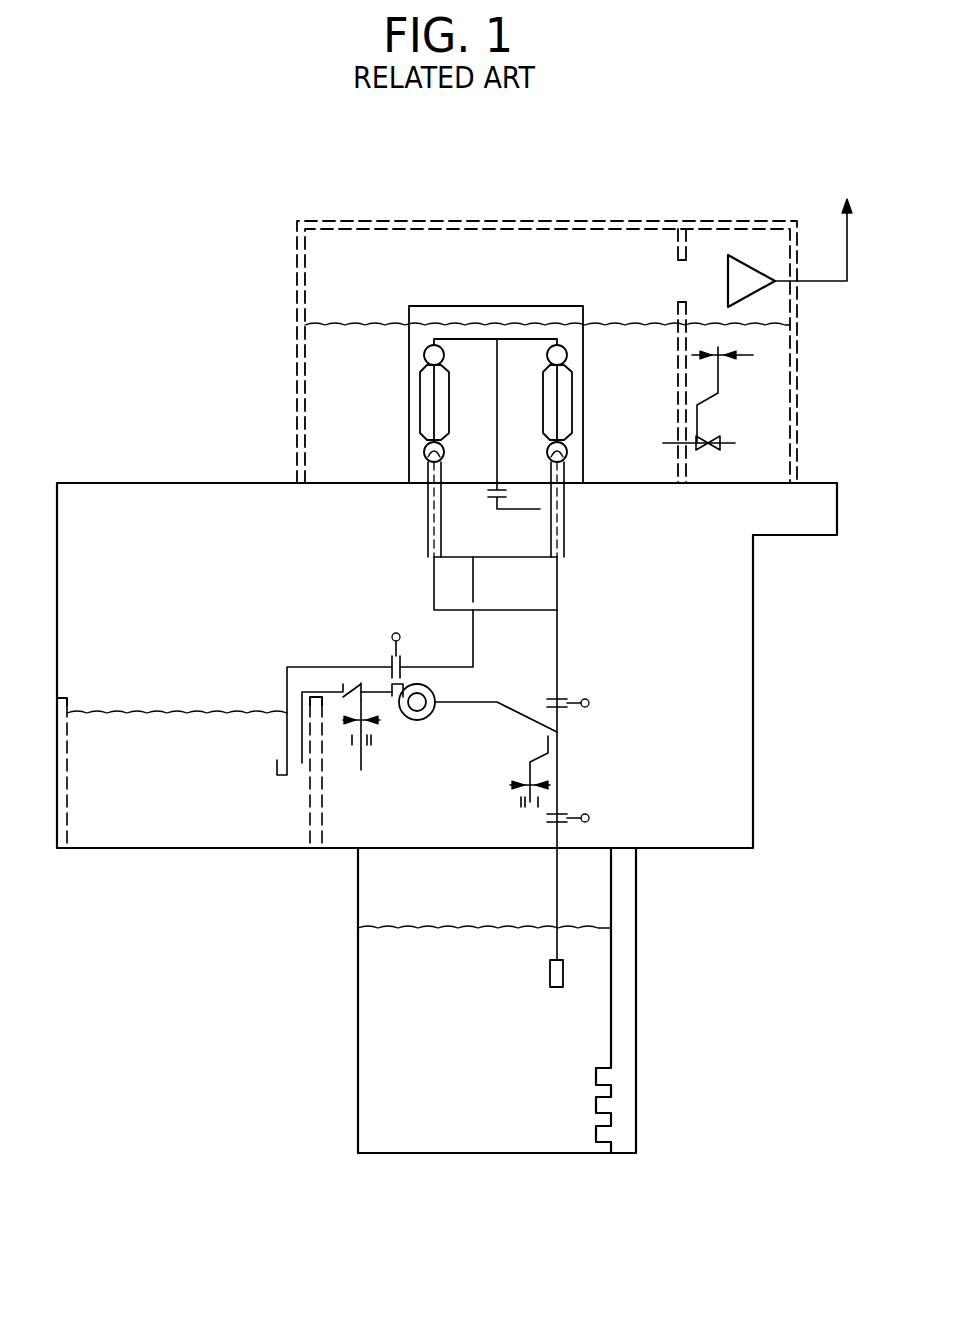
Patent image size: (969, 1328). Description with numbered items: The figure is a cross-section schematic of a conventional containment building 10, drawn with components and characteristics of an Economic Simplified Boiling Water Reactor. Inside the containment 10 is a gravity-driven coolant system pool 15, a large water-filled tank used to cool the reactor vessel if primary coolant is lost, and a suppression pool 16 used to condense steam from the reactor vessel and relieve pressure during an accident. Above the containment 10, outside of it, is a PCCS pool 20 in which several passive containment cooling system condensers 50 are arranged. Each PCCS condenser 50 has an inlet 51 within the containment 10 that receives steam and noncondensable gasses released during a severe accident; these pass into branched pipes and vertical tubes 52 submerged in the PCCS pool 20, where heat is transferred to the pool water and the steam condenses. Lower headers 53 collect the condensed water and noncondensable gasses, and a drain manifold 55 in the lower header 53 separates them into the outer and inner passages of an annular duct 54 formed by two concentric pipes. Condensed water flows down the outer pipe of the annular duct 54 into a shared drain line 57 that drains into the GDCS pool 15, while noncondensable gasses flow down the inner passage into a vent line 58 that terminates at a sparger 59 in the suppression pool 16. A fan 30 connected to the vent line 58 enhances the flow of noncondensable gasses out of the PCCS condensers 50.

The containment building 10 is at (753, 660).
The gravity-driven coolant system (GDCS) pool 15 is at (128, 837).
The suppression pool 16 is at (373, 1052).
The PCCS pool 20 is at (313, 405).
The fan 30 is at (432, 714).
The PCCS condenser 50 is at (583, 380).
The inlet 51 is at (497, 509).
The vertical tubes 52 is at (557, 376).
The lower header 53 is at (543, 453).
The annular duct 54 is at (562, 541).
The drain manifold 55 is at (584, 451).
The drain line 57 is at (473, 648).
The vent line 58 is at (557, 655).
The sparger 59 is at (548, 973).